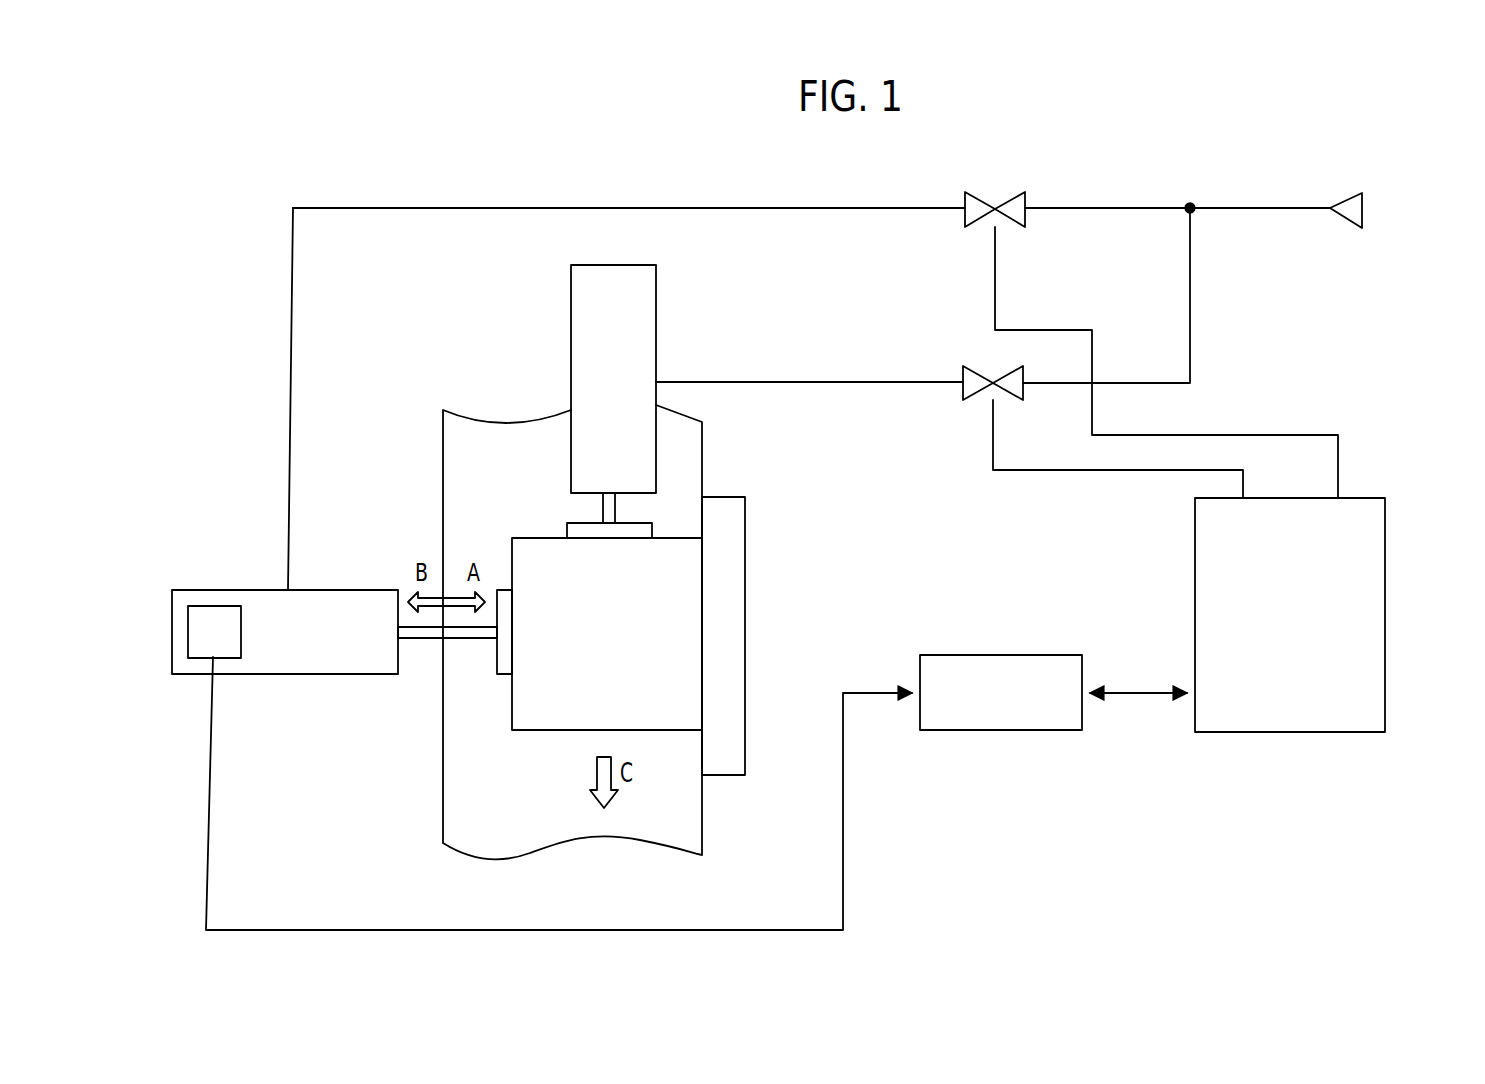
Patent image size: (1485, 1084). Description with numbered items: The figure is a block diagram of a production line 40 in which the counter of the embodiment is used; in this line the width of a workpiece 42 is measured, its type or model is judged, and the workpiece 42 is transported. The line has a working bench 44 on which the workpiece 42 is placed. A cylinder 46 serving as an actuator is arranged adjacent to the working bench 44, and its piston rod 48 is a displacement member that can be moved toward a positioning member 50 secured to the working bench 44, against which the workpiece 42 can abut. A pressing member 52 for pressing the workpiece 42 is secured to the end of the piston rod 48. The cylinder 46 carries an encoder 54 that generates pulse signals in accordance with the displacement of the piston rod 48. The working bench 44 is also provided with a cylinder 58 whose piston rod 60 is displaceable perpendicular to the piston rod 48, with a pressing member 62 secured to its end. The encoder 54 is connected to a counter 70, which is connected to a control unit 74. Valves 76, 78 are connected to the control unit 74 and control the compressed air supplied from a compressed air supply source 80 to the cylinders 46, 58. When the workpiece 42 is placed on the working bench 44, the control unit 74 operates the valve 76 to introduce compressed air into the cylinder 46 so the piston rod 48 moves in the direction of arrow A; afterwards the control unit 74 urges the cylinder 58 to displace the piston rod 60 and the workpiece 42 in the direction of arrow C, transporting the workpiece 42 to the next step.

The production line 40 is at (1130, 144).
The workpiece 42 is at (626, 642).
The working bench 44 is at (465, 797).
The cylinder 46 is at (305, 680).
The piston rod 48 is at (422, 638).
The positioning member 50 is at (730, 657).
The pressing member 52 is at (502, 666).
The encoder 54 is at (212, 606).
The cylinder 58 is at (566, 324).
The piston rod 60 is at (607, 505).
The pressing member 62 is at (608, 533).
The counter 70 is at (1006, 652).
The control unit 74 is at (1391, 539).
The valve 76 is at (984, 200).
The valve 78 is at (984, 375).
The compressed air supply source 80 is at (1345, 200).